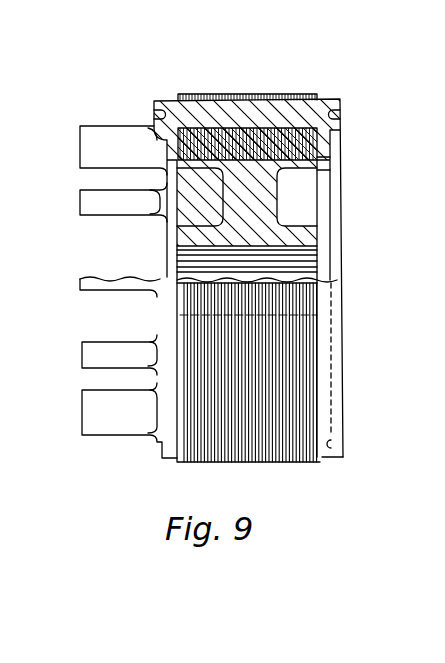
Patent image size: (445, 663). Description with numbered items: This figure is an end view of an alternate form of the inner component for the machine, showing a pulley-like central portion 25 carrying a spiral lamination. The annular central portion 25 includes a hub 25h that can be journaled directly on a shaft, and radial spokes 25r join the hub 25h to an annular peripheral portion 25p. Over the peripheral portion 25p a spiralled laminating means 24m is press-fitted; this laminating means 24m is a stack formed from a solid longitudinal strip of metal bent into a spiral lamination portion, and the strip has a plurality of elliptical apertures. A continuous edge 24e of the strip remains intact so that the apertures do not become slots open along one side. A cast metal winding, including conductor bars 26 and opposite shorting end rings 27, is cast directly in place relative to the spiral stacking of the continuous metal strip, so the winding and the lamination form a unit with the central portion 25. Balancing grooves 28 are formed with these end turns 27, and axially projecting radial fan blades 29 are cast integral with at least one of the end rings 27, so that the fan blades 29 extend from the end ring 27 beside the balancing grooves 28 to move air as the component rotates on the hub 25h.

The continuous edge 24e is at (258, 94).
The spiralled laminating means 24m is at (297, 147).
The pulley-like central portion 25 is at (247, 200).
The hub 25h is at (300, 237).
The annular peripheral portion 25p is at (300, 159).
The radial spokes 25r is at (300, 203).
The conductor bars 26 is at (222, 106).
The shorting end rings 27 is at (168, 105).
The balancing grooves 28 is at (157, 117).
The radial fan blades 29 is at (100, 348).